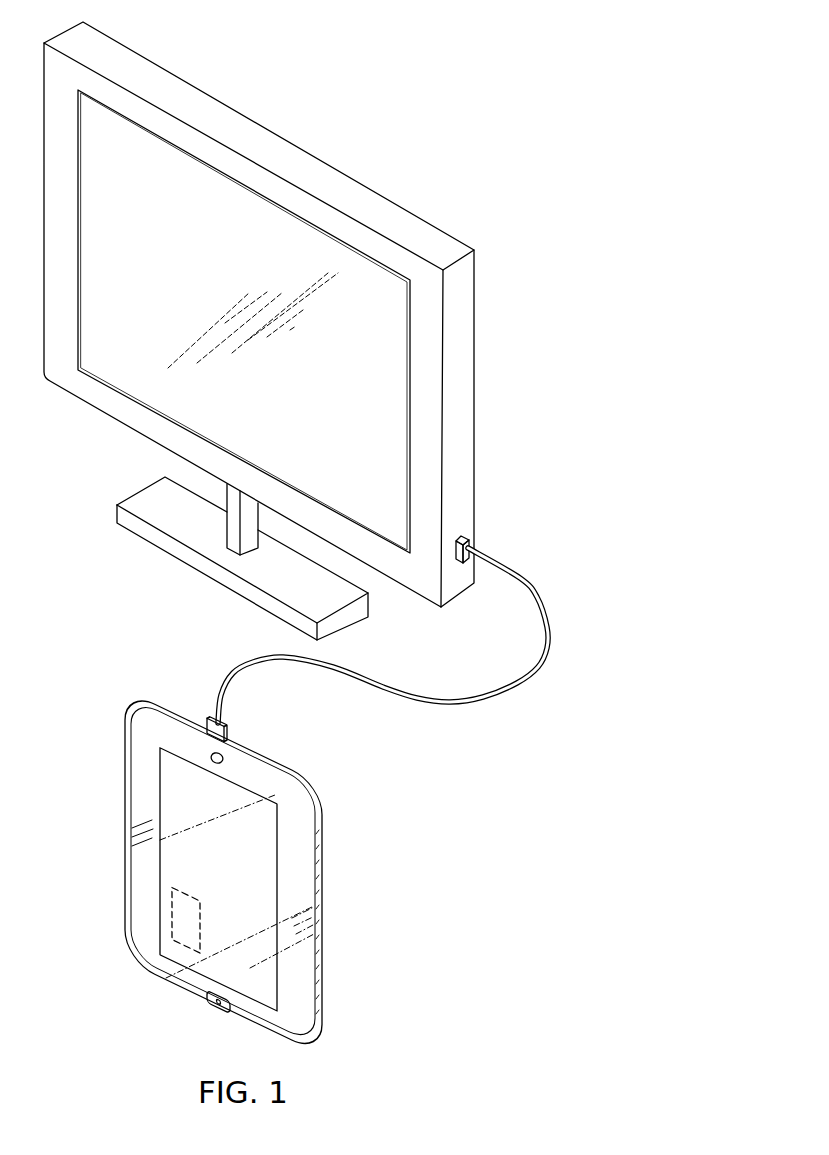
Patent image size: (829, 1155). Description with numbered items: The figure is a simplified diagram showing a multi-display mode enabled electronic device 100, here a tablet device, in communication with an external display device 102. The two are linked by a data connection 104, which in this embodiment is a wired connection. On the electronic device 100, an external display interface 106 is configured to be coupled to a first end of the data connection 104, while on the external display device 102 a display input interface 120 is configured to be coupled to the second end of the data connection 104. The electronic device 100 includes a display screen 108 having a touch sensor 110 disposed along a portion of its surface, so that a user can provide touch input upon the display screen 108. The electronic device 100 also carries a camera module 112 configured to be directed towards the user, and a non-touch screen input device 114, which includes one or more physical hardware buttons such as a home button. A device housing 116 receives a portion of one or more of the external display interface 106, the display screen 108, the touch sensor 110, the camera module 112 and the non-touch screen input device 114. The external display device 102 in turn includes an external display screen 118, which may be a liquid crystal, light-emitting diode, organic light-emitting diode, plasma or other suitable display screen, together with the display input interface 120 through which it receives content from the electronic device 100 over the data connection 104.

The multi-display mode enabled electronic device 100 is at (334, 760).
The external display device 102 is at (374, 158).
The data connection 104 is at (509, 571).
The external display interface 106 is at (211, 718).
The display screen 108 is at (168, 792).
The touch sensor 110 is at (177, 922).
The camera module 112 is at (225, 757).
The non-touch screen input device 114 is at (208, 1004).
The device housing 116 is at (125, 889).
The external display screen 118 is at (230, 266).
The display input interface 120 is at (468, 538).